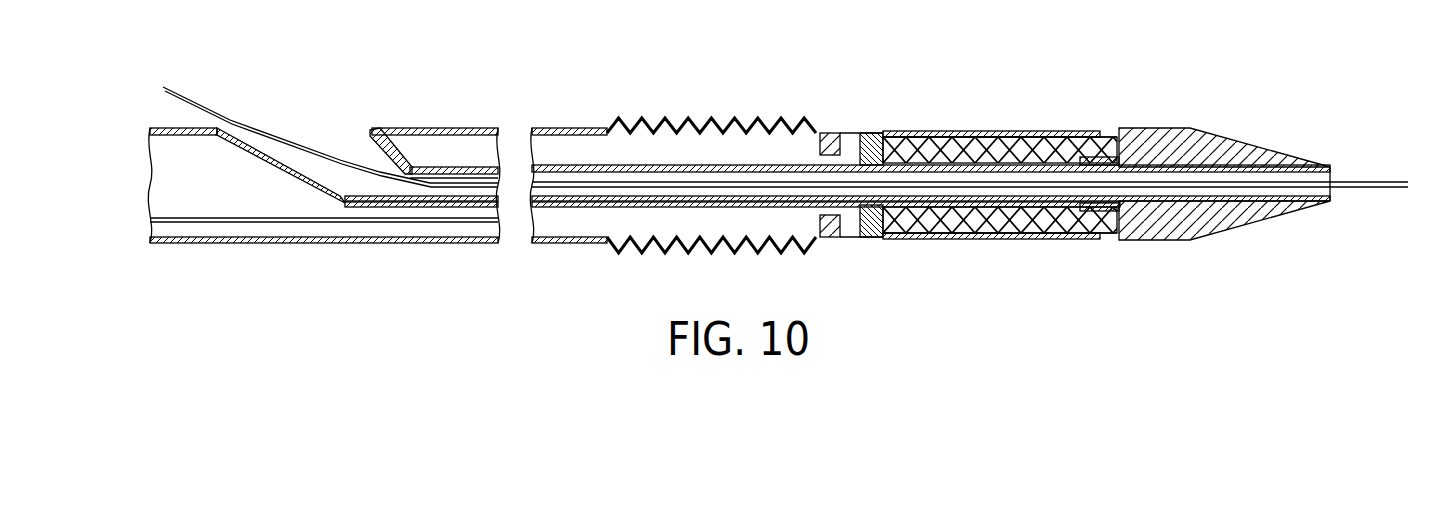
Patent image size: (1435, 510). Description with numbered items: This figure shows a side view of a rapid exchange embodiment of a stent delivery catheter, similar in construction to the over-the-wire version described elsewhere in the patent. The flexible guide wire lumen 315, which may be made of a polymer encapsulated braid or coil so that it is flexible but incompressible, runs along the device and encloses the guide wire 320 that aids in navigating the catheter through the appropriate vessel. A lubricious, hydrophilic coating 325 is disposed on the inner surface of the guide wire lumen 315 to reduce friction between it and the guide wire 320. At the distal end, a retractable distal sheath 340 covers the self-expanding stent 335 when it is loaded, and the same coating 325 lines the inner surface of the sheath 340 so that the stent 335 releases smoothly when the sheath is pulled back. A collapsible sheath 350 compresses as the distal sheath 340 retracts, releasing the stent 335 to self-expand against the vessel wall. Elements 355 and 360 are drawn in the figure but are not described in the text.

The guide wire lumen 315 is at (366, 150).
The guide wire 320 is at (231, 118).
The lubricious coating 325 is at (440, 206).
The self-expanding stent 335 is at (1087, 132).
The distal sheath 340 is at (1052, 131).
The collapsible sheath 350 is at (706, 118).
The ring block 355 is at (852, 132).
The braided mesh 360 is at (925, 238).